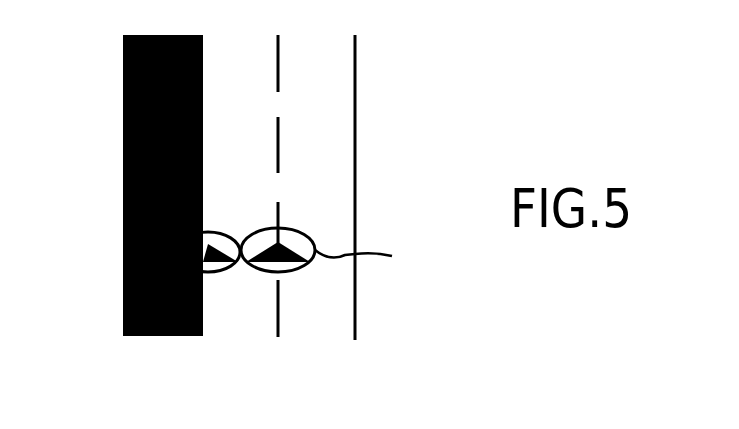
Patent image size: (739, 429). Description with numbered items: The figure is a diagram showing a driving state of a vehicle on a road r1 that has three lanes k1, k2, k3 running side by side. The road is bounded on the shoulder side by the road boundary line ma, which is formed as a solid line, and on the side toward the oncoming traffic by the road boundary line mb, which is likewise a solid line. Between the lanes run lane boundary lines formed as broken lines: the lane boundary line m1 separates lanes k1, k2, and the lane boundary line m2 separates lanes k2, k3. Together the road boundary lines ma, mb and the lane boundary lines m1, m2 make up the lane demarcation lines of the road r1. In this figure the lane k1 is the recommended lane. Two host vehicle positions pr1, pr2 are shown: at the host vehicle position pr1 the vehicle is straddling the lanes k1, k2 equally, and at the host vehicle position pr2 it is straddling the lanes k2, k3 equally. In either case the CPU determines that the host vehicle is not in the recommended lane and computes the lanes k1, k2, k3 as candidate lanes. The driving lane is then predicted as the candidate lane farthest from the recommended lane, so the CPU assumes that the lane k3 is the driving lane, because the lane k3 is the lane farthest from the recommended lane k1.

The road r1 is at (116, 201).
The host vehicle position pr1 is at (122, 246).
The host vehicle position pr2 is at (334, 250).
The road boundary line ma is at (125, 338).
The lane k1 is at (163, 338).
The lane boundary line m1 is at (200, 338).
The lane k2 is at (237, 328).
The lane boundary line m2 is at (278, 337).
The lane k3 is at (310, 328).
The road boundary line mb is at (355, 340).